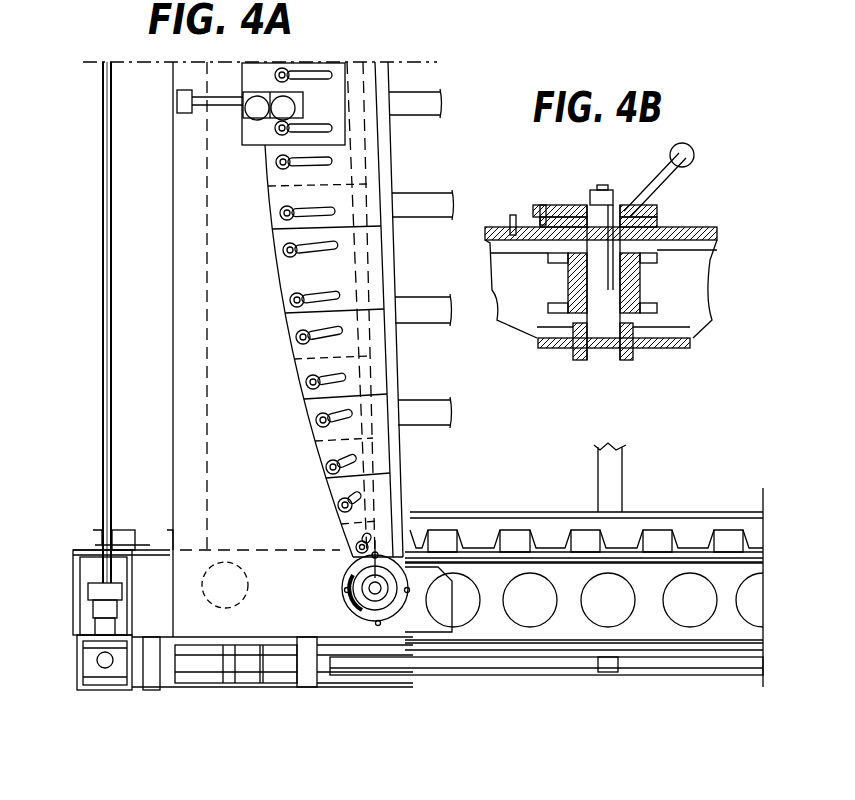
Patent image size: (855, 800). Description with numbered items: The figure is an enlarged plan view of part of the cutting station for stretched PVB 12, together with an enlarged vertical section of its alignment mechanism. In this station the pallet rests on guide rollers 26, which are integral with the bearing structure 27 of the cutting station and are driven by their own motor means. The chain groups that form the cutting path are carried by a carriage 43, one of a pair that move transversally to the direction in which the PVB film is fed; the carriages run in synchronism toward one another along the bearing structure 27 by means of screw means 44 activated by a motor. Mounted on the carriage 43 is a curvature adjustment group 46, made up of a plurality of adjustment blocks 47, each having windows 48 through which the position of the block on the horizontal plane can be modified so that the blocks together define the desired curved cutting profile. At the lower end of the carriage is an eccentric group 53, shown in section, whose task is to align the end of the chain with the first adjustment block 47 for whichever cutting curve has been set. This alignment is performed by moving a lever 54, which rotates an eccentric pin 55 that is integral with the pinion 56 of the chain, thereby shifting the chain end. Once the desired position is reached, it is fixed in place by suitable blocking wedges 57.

In FIG. 4A, the cutting station for stretched PVB 12 is at (97, 392).
In FIG. 4A, the carriage 43 is at (237, 262).
In FIG. 4A, the adjustment block 47 is at (298, 204).
In FIG. 4A, the window 48 is at (313, 252).
In FIG. 4A, the curvature adjustment group 46 is at (290, 365).
In FIG. 4A, the blocking wedge 57 is at (348, 572).
In FIG. 4B, the blocking wedge 57 is at (560, 203).
In FIG. 4A, the eccentric group 53 is at (357, 620).
In FIG. 4A, the lever 54 is at (377, 620).
In FIG. 4B, the lever 54 is at (657, 177).
In FIG. 4A, the screw means 44 is at (500, 663).
In FIG. 4A, the bearing structure 27 is at (647, 607).
In FIG. 4A, the guide roller 26 is at (703, 542).
In FIG. 4B, the eccentric pin 55 is at (637, 283).
In FIG. 4B, the pinion 56 is at (653, 310).